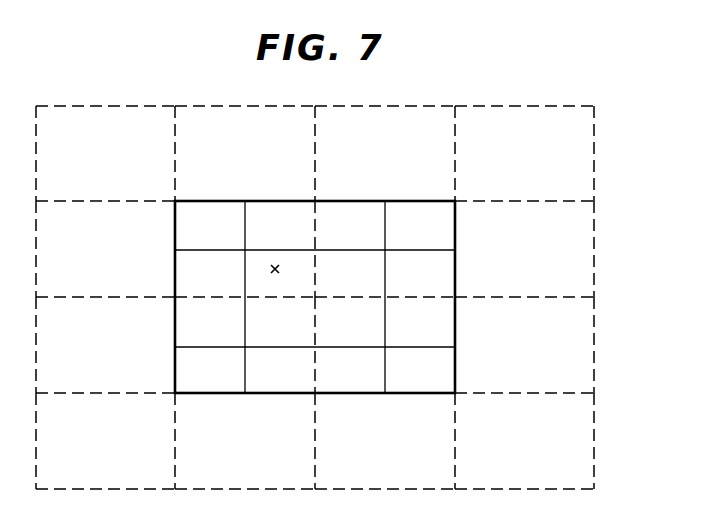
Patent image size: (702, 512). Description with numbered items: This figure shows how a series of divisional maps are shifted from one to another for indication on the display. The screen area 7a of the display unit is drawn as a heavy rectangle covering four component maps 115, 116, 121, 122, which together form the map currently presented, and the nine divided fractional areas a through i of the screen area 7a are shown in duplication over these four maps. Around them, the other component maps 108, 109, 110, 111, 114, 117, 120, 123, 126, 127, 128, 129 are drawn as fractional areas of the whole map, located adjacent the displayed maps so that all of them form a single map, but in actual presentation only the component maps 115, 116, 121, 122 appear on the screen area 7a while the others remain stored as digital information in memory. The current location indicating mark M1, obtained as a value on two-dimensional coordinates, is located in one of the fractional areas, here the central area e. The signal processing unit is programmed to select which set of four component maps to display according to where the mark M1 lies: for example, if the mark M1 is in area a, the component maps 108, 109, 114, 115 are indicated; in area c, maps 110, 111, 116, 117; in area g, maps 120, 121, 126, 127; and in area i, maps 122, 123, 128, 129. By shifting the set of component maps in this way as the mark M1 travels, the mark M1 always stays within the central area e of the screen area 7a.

The component map 108 is at (80, 138).
The component map 109 is at (220, 138).
The component map 110 is at (358, 138).
The component map 111 is at (498, 138).
The component map 114 is at (78, 232).
The component map 115 is at (210, 232).
The component map 116 is at (352, 232).
The component map 117 is at (498, 232).
The component map 120 is at (82, 330).
The component map 121 is at (208, 330).
The component map 122 is at (354, 331).
The component map 123 is at (498, 330).
The component map 126 is at (80, 425).
The component map 127 is at (215, 425).
The component map 128 is at (360, 425).
The component map 129 is at (498, 425).
The screen area 7a is at (455, 270).
The current location indicating mark M1 is at (275, 279).